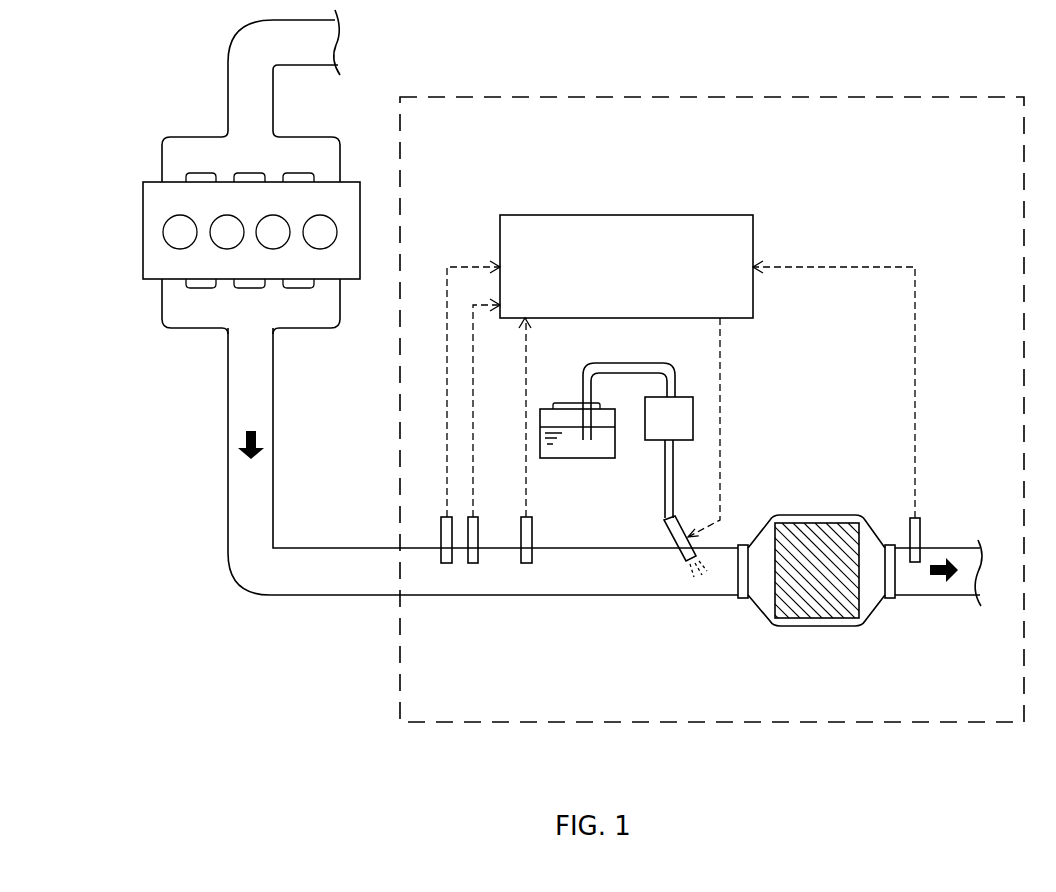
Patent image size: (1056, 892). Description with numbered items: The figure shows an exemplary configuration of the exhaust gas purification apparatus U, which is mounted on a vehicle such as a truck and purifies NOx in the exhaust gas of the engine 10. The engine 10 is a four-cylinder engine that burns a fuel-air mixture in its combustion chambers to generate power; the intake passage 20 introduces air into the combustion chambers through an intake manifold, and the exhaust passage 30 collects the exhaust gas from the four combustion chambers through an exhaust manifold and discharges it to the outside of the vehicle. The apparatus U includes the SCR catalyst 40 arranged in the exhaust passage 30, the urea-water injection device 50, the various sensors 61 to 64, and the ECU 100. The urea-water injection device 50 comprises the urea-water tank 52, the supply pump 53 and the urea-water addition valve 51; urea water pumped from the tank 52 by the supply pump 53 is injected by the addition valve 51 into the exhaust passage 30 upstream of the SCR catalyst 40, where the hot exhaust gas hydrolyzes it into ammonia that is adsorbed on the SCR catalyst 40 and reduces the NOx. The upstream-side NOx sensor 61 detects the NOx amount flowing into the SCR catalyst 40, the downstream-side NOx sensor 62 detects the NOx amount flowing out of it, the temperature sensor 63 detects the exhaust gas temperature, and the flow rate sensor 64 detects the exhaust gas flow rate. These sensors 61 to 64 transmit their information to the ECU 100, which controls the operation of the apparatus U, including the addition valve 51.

The engine 10 is at (143, 234).
The intake passage 20 is at (228, 92).
The exhaust passage 30 is at (228, 500).
The SCR catalyst 40 is at (827, 628).
The urea-water injection device 50 is at (562, 388).
The urea-water addition valve 51 is at (682, 520).
The urea-water tank 52 is at (588, 460).
The supply pump 53 is at (680, 397).
The upstream-side NOx sensor 61 is at (528, 517).
The downstream-side NOx sensor 62 is at (915, 518).
The temperature sensor 63 is at (474, 517).
The flow rate sensor 64 is at (445, 517).
The ECU 100 is at (683, 215).
The exhaust gas purification apparatus U is at (914, 96).